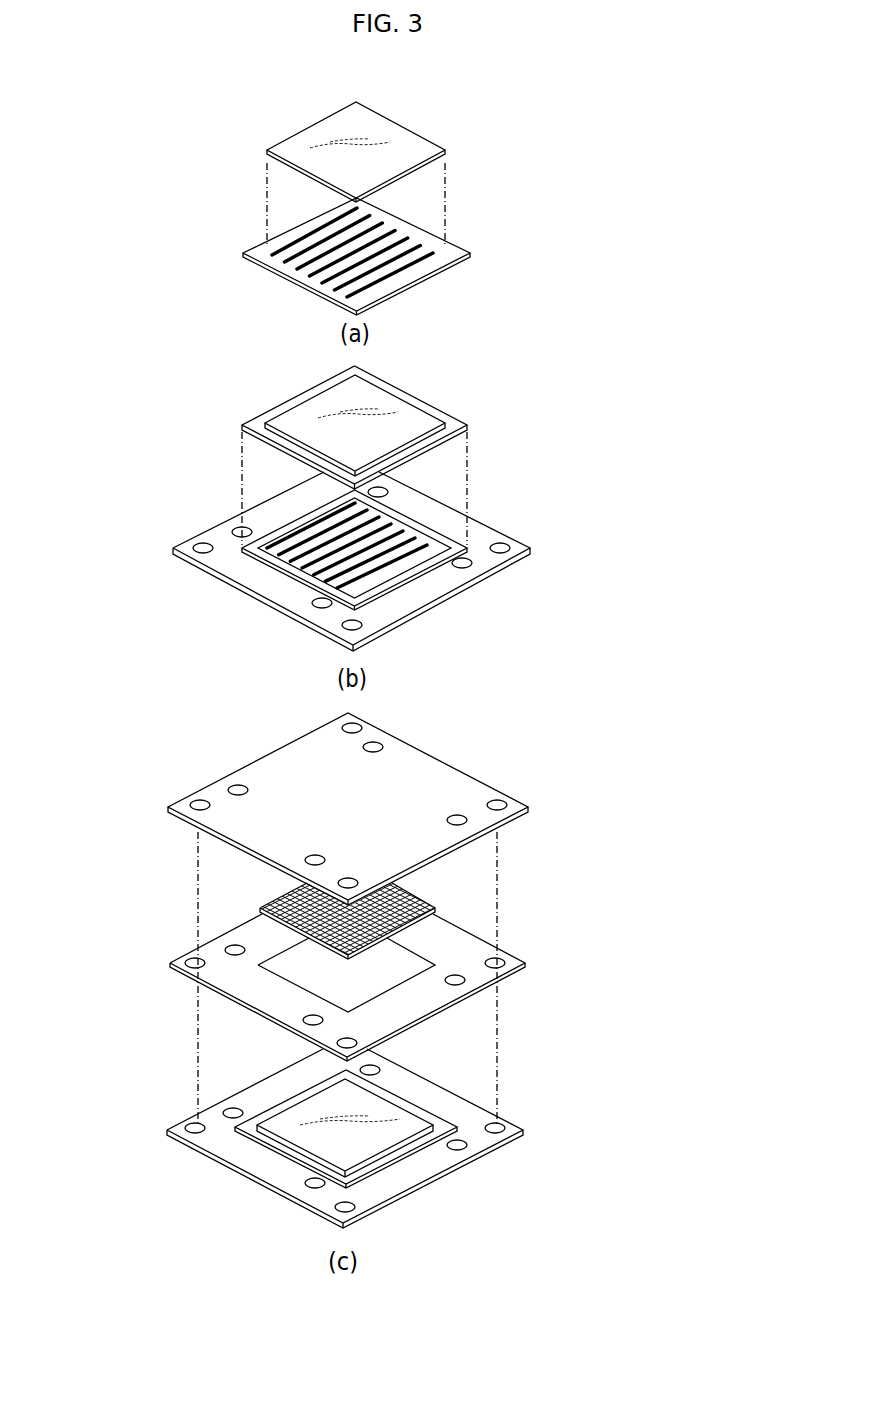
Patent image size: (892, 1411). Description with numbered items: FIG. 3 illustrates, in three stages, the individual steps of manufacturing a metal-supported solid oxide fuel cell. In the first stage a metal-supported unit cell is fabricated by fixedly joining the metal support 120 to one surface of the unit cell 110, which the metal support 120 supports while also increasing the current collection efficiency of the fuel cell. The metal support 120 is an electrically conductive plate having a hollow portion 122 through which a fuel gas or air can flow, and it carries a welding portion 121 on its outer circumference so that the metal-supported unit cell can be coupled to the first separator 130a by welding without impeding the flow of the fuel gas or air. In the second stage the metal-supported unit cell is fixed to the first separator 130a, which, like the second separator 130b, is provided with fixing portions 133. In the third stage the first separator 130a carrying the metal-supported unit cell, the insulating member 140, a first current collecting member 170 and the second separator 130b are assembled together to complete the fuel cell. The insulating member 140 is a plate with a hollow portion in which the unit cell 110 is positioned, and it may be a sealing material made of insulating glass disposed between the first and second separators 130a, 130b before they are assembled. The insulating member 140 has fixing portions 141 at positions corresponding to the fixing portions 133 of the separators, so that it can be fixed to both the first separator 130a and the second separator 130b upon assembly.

The unit cell 110 is at (422, 129).
The metal support 120 is at (397, 323).
The welding portion 121 is at (443, 273).
The hollow portion 122 is at (430, 257).
The first separator 130a is at (512, 518).
The second separator 130b is at (482, 790).
The fixing portions 133 is at (360, 629).
The insulating member 140 is at (389, 978).
The fixing portions 141 is at (513, 960).
The first current collecting member 170 is at (258, 908).